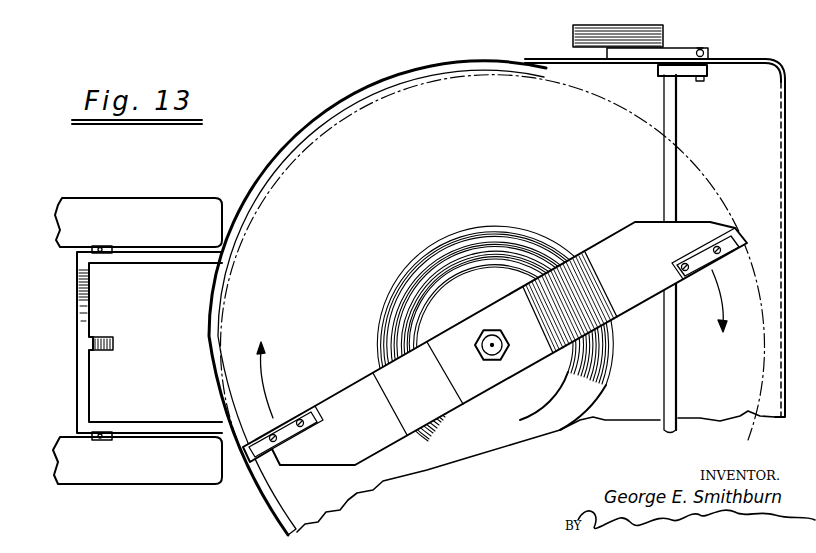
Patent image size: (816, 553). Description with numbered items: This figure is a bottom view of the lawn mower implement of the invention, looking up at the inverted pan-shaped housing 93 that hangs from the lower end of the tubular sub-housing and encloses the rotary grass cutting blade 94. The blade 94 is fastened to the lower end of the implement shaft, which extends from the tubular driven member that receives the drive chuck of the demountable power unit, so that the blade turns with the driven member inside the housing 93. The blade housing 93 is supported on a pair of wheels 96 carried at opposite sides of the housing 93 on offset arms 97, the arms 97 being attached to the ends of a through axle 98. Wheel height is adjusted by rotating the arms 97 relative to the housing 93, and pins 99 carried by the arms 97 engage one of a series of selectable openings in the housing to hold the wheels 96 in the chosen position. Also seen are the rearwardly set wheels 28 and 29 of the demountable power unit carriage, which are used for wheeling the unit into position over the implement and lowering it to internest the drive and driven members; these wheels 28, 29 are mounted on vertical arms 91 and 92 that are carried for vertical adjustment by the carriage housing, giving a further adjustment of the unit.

The wheel 28 is at (122, 198).
The wheel 29 is at (140, 471).
The vertical arm 91 is at (103, 250).
The vertical arm 92 is at (106, 430).
The inverted pan-shaped housing 93 is at (360, 92).
The rotary grass cutting blade 94 is at (340, 393).
The wheels 96 is at (590, 28).
The offset arms 97 is at (686, 53).
The through axle 98 is at (671, 124).
The pins 99 is at (703, 48).